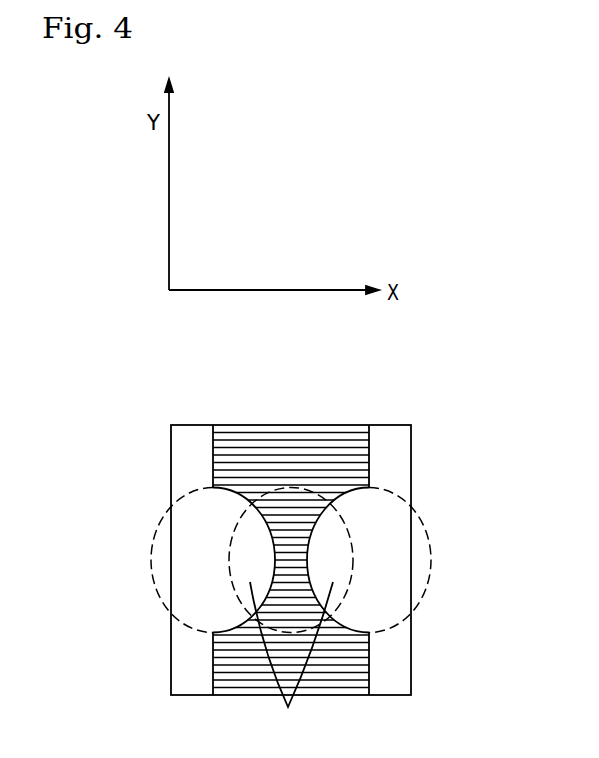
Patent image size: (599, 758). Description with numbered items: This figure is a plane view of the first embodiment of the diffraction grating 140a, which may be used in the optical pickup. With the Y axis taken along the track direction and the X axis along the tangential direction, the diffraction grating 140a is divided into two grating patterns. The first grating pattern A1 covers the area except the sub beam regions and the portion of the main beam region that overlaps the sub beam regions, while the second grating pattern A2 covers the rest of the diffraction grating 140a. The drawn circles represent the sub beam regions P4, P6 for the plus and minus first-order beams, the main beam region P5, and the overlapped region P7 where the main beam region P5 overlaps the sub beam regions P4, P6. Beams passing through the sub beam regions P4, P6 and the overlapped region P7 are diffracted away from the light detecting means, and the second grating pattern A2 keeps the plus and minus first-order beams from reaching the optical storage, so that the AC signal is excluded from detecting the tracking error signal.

The diffraction grating 140a is at (389, 424).
The second grating pattern A2 is at (192, 434).
The first grating pattern A1 is at (294, 434).
The sub beam region P4 is at (188, 567).
The main beam region P5 is at (276, 500).
The sub beam region P6 is at (397, 562).
The overlapped region P7 is at (291, 660).